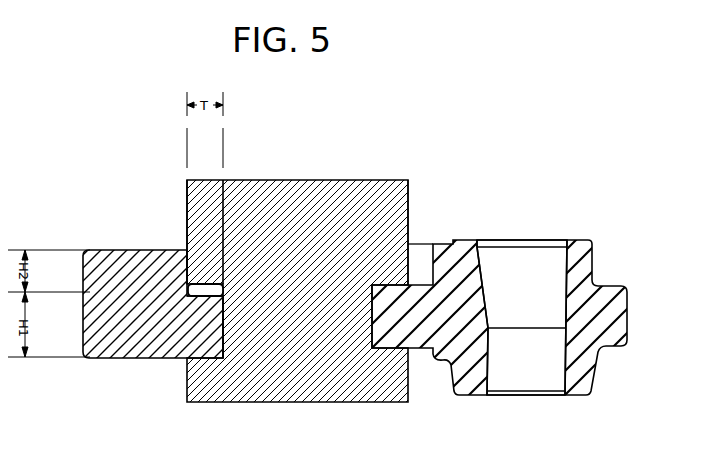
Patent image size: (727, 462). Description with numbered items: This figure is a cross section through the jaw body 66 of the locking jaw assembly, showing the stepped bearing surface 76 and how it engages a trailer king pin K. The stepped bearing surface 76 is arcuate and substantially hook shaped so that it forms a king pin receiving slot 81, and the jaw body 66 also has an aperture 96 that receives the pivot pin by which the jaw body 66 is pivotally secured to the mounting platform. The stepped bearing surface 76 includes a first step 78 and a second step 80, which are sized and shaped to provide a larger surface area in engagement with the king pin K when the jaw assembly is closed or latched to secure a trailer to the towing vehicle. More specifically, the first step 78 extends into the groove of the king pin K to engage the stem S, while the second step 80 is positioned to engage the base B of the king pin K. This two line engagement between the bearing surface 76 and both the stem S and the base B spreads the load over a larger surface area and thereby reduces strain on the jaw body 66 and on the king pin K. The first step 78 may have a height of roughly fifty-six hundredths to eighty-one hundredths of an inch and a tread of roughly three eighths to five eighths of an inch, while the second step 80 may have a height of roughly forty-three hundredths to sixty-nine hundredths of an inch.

The jaw body 66 is at (90, 250).
The stepped bearing surface 76 is at (302, 150).
The first step 78 is at (223, 340).
The second step 80 is at (196, 284).
The king pin receiving slot 81 is at (189, 264).
The aperture 96 is at (513, 263).
The base B is at (408, 213).
The trailer king pin K is at (408, 385).
The stem S is at (222, 333).